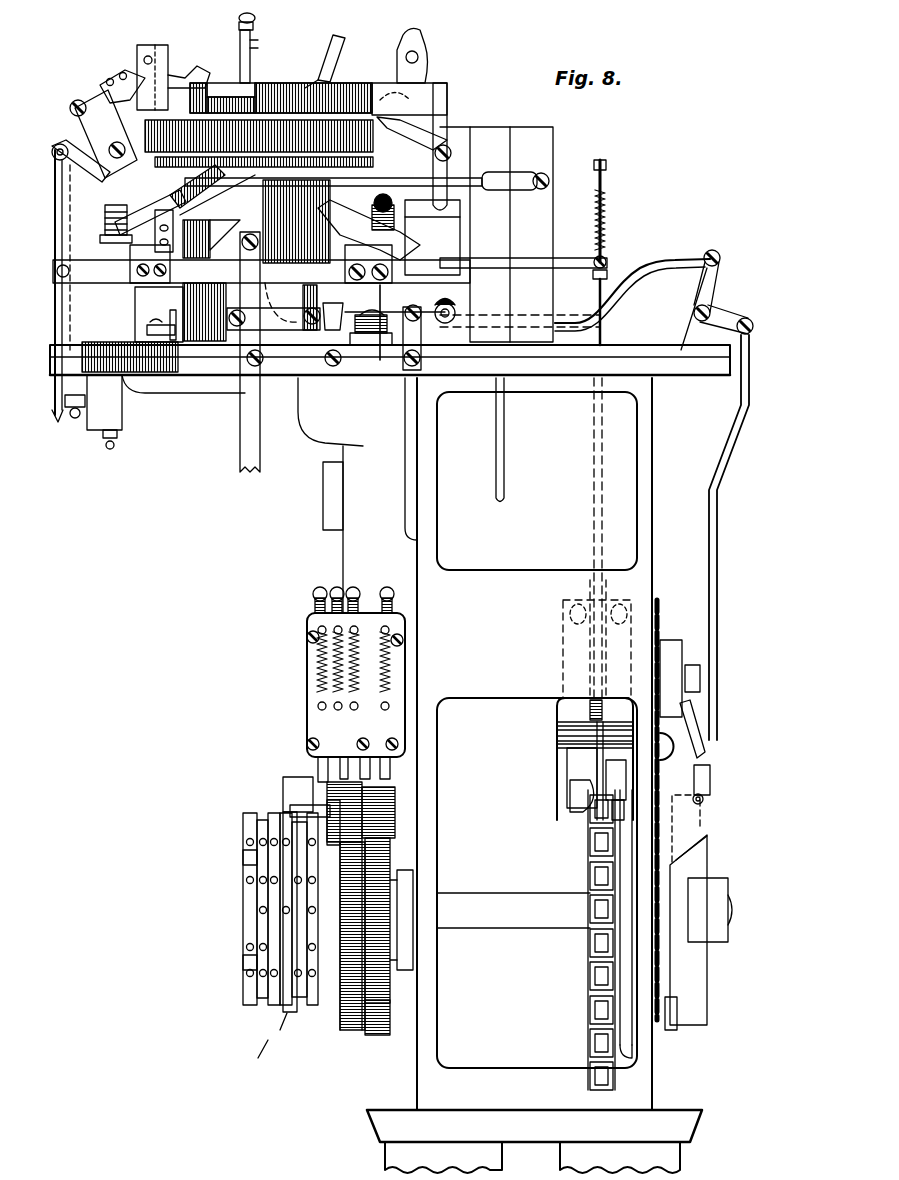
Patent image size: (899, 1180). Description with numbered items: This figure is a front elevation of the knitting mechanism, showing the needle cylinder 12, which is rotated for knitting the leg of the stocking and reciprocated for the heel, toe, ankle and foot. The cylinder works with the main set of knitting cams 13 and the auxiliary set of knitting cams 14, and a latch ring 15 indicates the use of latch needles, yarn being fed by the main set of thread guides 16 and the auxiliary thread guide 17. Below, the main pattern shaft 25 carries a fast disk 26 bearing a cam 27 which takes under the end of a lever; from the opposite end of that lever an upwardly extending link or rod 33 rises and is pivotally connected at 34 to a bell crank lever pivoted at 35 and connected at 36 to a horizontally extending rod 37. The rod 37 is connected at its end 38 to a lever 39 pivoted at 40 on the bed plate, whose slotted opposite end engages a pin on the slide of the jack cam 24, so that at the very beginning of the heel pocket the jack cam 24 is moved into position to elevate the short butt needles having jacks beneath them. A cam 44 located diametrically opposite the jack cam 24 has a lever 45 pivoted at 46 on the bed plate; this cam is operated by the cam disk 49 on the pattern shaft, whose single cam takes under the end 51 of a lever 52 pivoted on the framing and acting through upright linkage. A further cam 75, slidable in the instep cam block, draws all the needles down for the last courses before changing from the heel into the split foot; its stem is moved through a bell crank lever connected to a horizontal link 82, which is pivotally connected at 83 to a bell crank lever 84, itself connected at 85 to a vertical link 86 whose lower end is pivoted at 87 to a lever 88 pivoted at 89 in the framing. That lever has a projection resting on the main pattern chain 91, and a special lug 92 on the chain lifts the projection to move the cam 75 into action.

The needle cylinder 12 is at (183, 297).
The main set of knitting cams 13 is at (343, 200).
The auxiliary set of knitting cams 14 is at (215, 195).
The latch ring 15 is at (285, 97).
The main set of thread guides 16 is at (337, 80).
The auxiliary thread guide 17 is at (192, 74).
The jack cam 24 is at (330, 304).
The main pattern shaft 25 is at (737, 907).
The disk 26 is at (698, 832).
The cam 27 is at (710, 780).
The link or rod 33 is at (720, 536).
The pivotal connection 34 is at (756, 327).
The pivot of bell crank lever 35 is at (731, 284).
The pivotal connection 36 is at (727, 247).
The horizontally extending rod or link 37 is at (664, 262).
The end of rod 38 is at (370, 315).
The lever 39 is at (382, 362).
The pivot of lever 40 is at (380, 330).
The cam 44 is at (183, 325).
The lever 45 is at (157, 335).
The pivot of lever 46 is at (170, 326).
The cam disk 49 is at (243, 928).
The end of lever 51 is at (283, 812).
The lever 52 is at (300, 788).
The cam 75 is at (172, 198).
The horizontal link 82 is at (399, 180).
The pivotal connection 83 is at (553, 180).
The bell crank lever 84 is at (566, 212).
The pivotal connection 85 is at (593, 266).
The vertical link 86 is at (604, 322).
The pivotal connection 87 is at (565, 714).
The lever 88 is at (577, 773).
The pivot of lever 89 is at (672, 746).
The main pattern chain 91 is at (590, 1042).
The special lug 92 is at (590, 947).